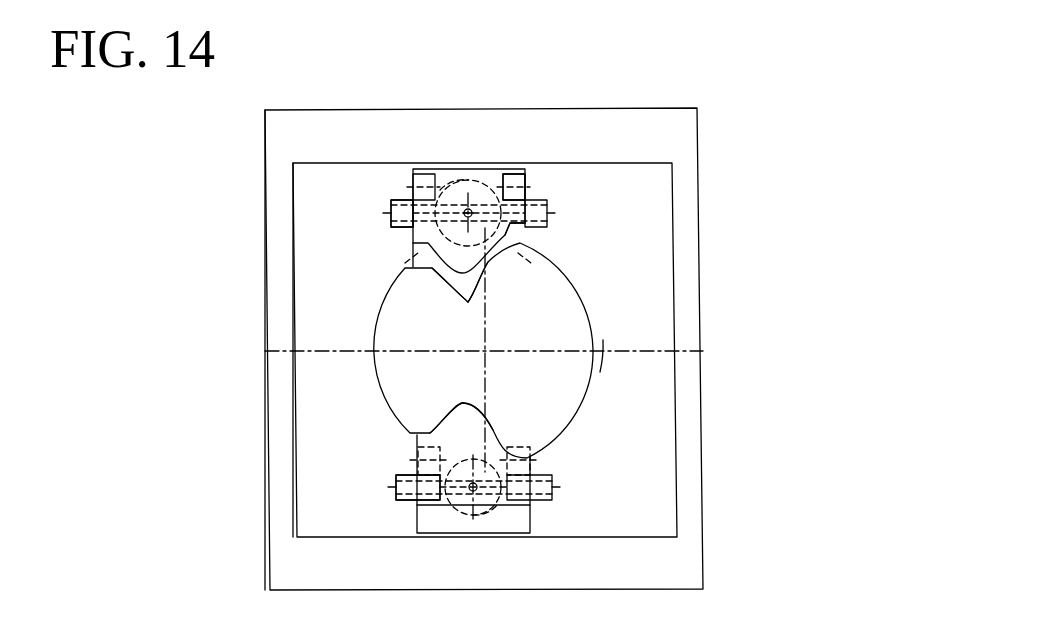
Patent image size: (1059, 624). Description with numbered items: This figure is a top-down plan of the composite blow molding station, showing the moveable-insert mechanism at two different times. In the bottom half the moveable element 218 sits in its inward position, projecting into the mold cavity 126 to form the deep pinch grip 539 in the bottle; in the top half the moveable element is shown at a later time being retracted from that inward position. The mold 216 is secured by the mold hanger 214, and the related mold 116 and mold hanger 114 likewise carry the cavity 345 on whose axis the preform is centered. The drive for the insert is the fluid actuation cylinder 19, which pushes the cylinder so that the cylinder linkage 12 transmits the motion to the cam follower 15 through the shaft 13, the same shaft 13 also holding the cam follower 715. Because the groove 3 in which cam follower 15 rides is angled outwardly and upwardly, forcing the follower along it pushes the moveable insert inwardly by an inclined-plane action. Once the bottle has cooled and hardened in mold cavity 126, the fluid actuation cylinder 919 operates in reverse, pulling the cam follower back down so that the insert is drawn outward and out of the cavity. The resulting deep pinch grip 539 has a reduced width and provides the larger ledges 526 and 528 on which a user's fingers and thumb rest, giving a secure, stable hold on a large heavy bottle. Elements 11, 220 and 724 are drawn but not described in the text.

The groove 3 is at (513, 173).
The lower clamp block 11 is at (463, 505).
The cylinder linkage 12 is at (470, 203).
The shaft 13 is at (485, 207).
The cam follower 15 is at (538, 200).
The fluid actuation cylinder 19 is at (450, 180).
The mold hanger 114 is at (704, 563).
The mold 116 is at (677, 477).
The mold cavity 126 is at (380, 295).
The mold hanger 214 is at (267, 135).
The mold 216 is at (292, 200).
The moveable element 218 is at (447, 413).
The upper flexure tab 220 is at (512, 224).
The cavity 345 is at (438, 237).
The ledge 526 is at (438, 272).
The ledge 528 is at (487, 418).
The deep pinch grip 539 is at (467, 402).
The cam follower 715 is at (392, 228).
The optical element edge 724 is at (603, 370).
The fluid actuation cylinder 919 is at (495, 515).